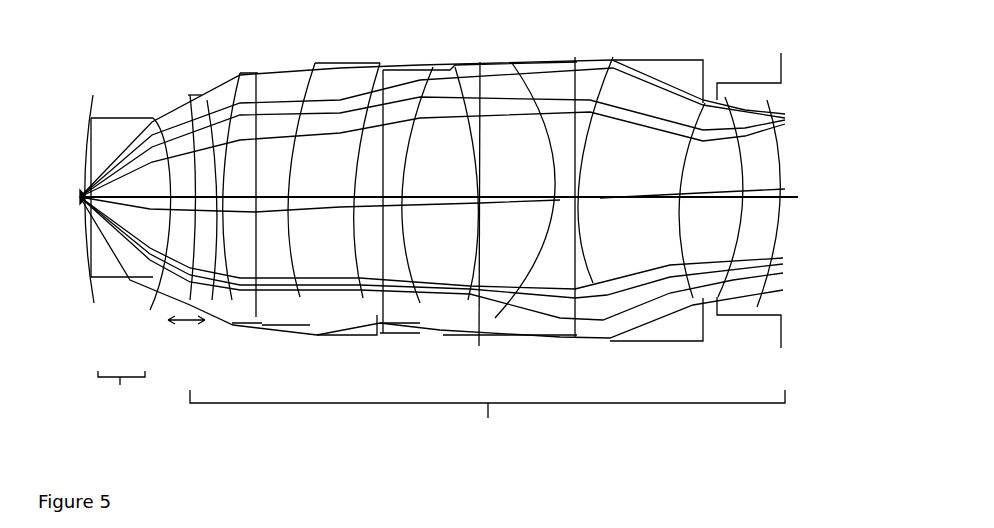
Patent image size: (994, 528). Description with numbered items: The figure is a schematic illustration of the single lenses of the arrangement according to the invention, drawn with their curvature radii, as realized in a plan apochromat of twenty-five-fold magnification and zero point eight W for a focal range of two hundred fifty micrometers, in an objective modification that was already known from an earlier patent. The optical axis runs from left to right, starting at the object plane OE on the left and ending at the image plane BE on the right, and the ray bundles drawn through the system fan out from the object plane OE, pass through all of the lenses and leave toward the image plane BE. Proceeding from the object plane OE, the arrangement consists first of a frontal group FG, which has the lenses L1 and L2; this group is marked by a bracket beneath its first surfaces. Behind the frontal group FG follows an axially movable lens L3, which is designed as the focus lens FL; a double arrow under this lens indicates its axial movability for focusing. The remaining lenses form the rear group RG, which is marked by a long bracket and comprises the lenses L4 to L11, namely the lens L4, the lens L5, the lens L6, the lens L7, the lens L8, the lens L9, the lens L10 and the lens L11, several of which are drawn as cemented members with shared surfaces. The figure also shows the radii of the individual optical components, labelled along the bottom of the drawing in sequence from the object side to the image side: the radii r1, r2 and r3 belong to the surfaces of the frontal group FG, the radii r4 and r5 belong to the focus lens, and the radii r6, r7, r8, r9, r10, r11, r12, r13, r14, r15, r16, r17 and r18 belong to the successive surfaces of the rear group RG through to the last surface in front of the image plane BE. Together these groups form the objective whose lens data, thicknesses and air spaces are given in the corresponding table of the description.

The lens L1 is at (128, 218).
The lens L2 is at (156, 218).
The lens L3 is at (206, 195).
The lens L4 is at (271, 195).
The lens L5 is at (334, 195).
The lens L6 is at (417, 195).
The lens L7 is at (505, 195).
The lens L8 is at (506, 195).
The lens L9 is at (558, 195).
The lens L10 is at (641, 195).
The lens L11 is at (758, 195).
The object plane OE is at (56, 197).
The image plane BE is at (815, 197).
The frontal group FG is at (121, 397).
The rear group RG is at (487, 423).
The radius r1 is at (95, 215).
The radius r2 is at (137, 243).
The radius r3 is at (163, 232).
The radius r4 is at (202, 244).
The radius r5 is at (230, 231).
The radius r6 is at (268, 231).
The radius r7 is at (305, 226).
The radius r8 is at (364, 226).
The radius r9 is at (397, 229).
The radius r10 is at (427, 228).
The radius r11 is at (474, 228).
The radius r12 is at (507, 225).
The radius r13 is at (537, 226).
The radius r14 is at (598, 223).
The radius r15 is at (621, 223).
The radius r16 is at (689, 246).
The radius r17 is at (733, 243).
The radius r18 is at (781, 244).